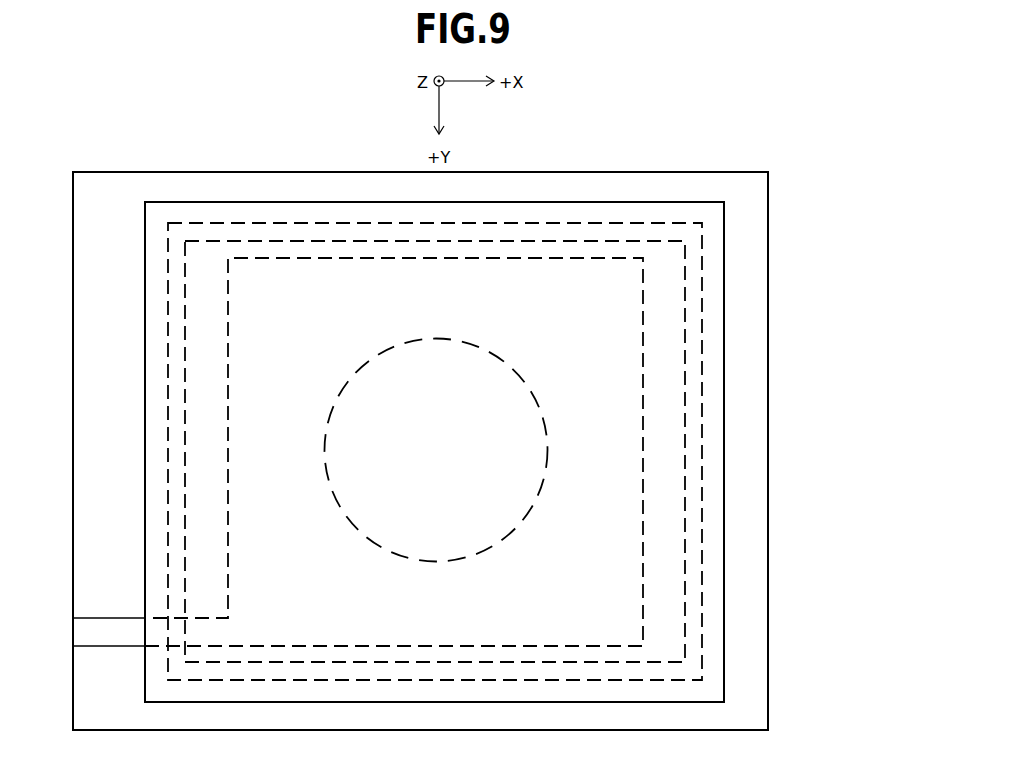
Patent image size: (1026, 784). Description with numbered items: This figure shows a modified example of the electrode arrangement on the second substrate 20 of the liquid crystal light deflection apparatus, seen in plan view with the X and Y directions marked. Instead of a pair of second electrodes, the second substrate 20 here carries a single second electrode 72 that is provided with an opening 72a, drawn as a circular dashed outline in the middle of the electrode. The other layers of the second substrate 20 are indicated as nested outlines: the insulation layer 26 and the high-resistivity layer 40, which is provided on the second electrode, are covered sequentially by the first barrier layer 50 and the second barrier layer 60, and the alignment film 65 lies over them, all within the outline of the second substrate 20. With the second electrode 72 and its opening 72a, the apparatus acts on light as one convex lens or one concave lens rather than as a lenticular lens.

The second substrate 20 is at (768, 683).
The insulation layer 26 is at (523, 451).
The high-resistivity layer 40 is at (685, 493).
The first barrier layer 50 is at (701, 541).
The second barrier layer 60 is at (452, 452).
The alignment film 65 is at (725, 600).
The second electrode 72 is at (645, 366).
The opening 72a is at (503, 397).